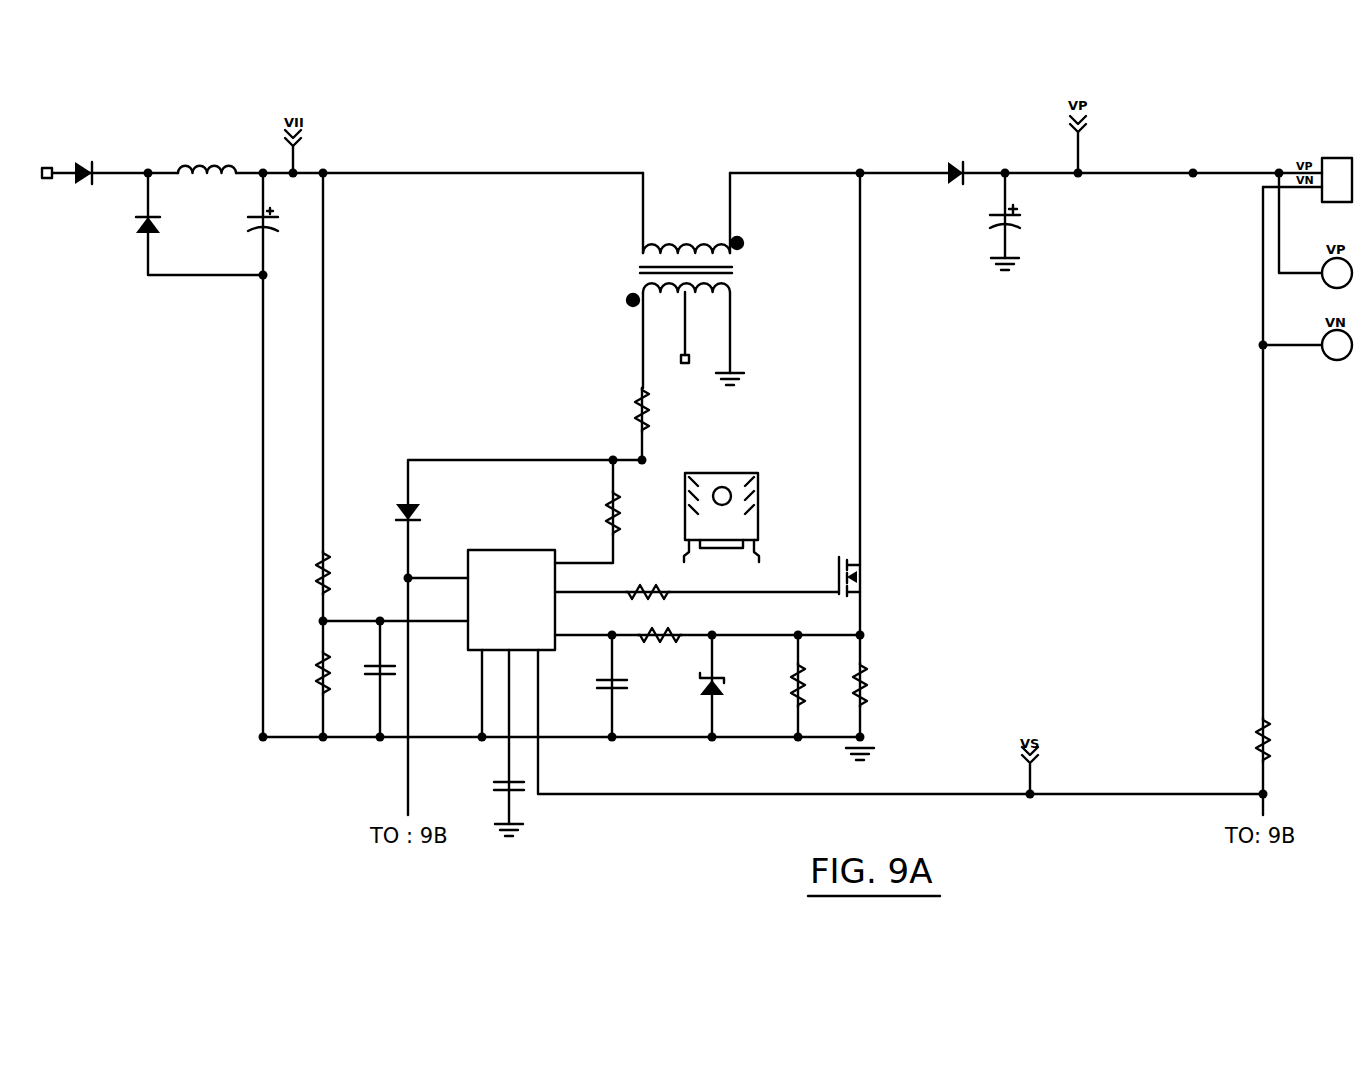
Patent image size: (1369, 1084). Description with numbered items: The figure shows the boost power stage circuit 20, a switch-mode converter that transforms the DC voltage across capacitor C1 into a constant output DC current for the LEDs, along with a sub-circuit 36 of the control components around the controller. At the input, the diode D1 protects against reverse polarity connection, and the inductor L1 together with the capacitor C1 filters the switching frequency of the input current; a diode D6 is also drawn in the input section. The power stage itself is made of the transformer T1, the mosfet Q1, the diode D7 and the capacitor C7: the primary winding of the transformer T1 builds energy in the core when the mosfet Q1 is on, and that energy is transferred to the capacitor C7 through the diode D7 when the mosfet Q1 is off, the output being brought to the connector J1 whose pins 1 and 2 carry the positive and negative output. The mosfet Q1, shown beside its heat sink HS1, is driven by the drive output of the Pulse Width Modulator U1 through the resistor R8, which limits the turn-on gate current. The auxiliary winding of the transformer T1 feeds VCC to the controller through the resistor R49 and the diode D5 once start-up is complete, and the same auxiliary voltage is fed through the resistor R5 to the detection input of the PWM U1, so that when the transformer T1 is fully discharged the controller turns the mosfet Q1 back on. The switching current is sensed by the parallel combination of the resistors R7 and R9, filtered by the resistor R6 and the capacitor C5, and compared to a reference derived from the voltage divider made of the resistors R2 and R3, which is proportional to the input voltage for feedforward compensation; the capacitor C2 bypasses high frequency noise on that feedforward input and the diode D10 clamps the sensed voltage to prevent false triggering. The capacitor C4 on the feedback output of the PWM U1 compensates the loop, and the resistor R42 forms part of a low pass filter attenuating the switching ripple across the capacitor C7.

The boost power stage circuit 20 is at (502, 167).
The control circuit 36 is at (302, 815).
The line 1 of transformer T1 / line 1 of PWM U1 1 is at (1335, 175).
The line 2 of PWM U1 2 is at (1335, 191).
The diode D1 is at (84, 157).
The inductor L1 is at (207, 145).
The diode D6 is at (124, 218).
The capacitor C1 is at (242, 215).
The transformer T1 is at (685, 259).
The diode D7 is at (941, 157).
The capacitor C7 is at (1020, 235).
The output connector J1 is at (1337, 170).
The resistor R49 is at (623, 410).
The diode D5 is at (385, 505).
The resistor R5 is at (602, 512).
The Pulse Width Modulator U1 is at (509, 601).
The resistor R8 is at (648, 572).
The heat sink HS1 is at (721, 525).
The mosfet Q1 is at (865, 576).
The resistor R2 is at (303, 572).
The resistor R3 is at (303, 673).
The capacitor C2 is at (365, 656).
The capacitor C5 is at (590, 673).
The resistor R6 is at (660, 646).
The diode D10 is at (733, 679).
The resistor R9 is at (811, 685).
The resistor R7 is at (873, 685).
The resistor R42 is at (1280, 740).
The capacitor C4 is at (496, 808).